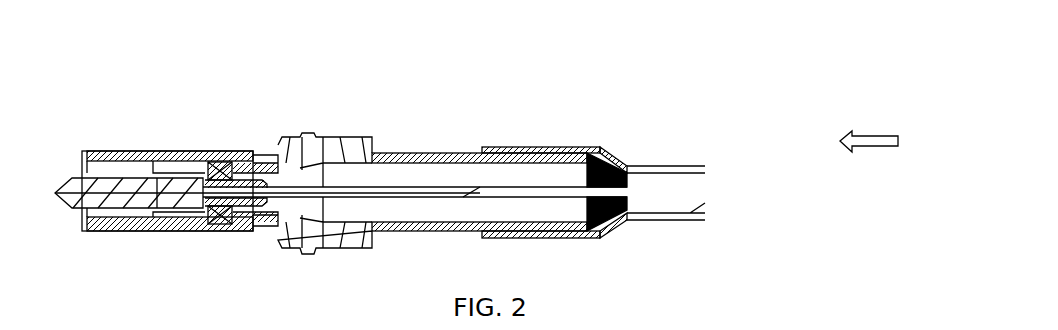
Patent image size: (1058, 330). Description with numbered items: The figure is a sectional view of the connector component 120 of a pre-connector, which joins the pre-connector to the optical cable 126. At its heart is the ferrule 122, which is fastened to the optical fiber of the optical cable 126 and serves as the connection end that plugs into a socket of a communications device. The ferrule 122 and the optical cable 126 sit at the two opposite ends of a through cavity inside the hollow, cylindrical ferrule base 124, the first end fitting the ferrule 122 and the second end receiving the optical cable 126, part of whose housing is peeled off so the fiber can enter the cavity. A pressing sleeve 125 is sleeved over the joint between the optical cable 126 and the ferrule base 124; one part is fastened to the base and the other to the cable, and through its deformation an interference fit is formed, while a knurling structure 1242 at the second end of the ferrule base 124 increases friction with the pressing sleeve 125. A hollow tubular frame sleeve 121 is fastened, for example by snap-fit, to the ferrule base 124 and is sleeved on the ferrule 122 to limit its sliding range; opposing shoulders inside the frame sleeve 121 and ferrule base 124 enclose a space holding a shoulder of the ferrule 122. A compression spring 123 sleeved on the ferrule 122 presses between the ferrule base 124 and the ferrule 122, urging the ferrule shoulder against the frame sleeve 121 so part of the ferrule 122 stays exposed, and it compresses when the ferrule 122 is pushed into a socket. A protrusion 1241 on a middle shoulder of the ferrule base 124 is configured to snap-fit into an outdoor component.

The connector component 120 is at (892, 141).
The frame sleeve 121 is at (102, 150).
The ferrule 122 is at (165, 182).
The compression spring 123 is at (217, 172).
The protrusion 1241 is at (307, 127).
The ferrule base 124 is at (402, 157).
The knurling structure 1242 is at (507, 150).
The pressing sleeve 125 is at (559, 147).
The optical cable 126 is at (688, 193).